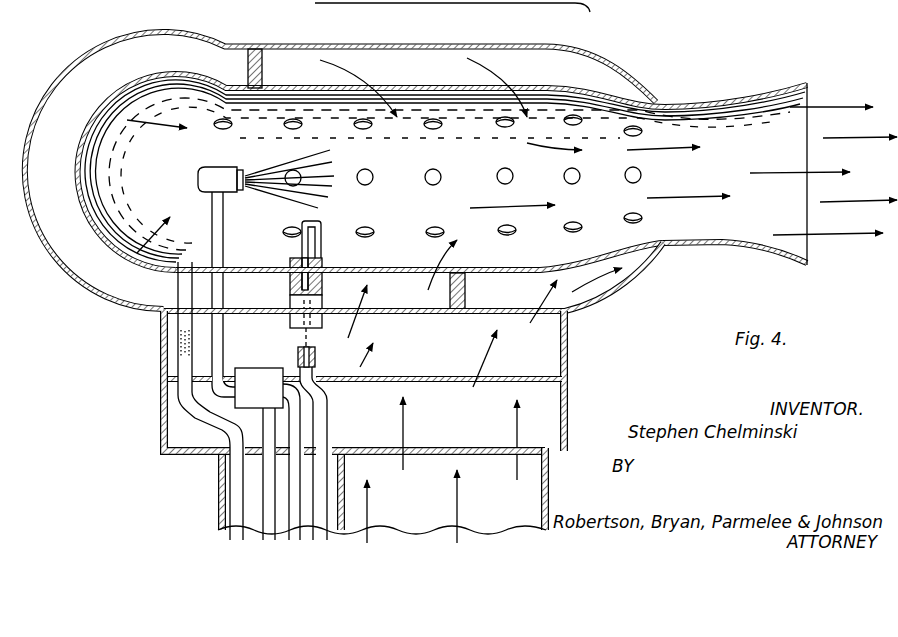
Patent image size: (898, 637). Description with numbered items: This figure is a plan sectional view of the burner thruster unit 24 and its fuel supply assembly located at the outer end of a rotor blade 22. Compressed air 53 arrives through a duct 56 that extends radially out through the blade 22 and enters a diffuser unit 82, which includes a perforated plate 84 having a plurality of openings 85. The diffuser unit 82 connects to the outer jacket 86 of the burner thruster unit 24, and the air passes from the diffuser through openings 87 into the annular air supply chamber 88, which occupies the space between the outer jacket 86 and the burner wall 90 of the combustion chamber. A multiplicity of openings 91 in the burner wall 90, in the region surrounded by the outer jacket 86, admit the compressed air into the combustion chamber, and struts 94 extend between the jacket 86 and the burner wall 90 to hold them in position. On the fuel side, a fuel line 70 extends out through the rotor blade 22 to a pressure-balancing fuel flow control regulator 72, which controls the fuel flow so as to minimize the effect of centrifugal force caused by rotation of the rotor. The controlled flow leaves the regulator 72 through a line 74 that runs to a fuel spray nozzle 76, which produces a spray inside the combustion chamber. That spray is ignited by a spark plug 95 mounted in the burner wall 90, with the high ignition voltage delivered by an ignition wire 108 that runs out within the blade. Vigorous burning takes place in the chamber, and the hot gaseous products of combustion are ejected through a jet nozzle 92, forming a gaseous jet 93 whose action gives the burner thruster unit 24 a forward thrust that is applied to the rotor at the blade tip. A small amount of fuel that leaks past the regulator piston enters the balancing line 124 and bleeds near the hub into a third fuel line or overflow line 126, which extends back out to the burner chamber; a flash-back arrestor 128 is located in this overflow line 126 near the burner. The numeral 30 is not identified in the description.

The rotor blade 22 is at (545, 488).
The burner thruster unit 24 is at (652, 73).
The combustion chamber holes 30 is at (484, 161).
The compressed air 53 is at (529, 322).
The duct 56 is at (430, 501).
The fuel line 70 is at (272, 498).
The pressure-balancing fuel flow control regulator 72 is at (245, 362).
The line 74 is at (217, 247).
The fuel spray nozzle 76 is at (214, 170).
The diffuser unit 82 is at (573, 400).
The perforated plate 84 is at (387, 382).
The openings 85 is at (418, 383).
The outer jacket 86 is at (305, 43).
The openings 87 is at (267, 310).
The annular air supply chamber 88 is at (435, 74).
The burner wall 90 is at (493, 250).
The openings 91 is at (130, 182).
The jet nozzle 92 is at (770, 258).
The gaseous jet 93 is at (850, 233).
The struts 94 is at (253, 65).
The spark plug 95 is at (333, 228).
The ignition wire 108 is at (323, 470).
The balancing line 124 is at (296, 540).
The overflow line 126 is at (243, 480).
The flash-back arrestor 128 is at (178, 340).